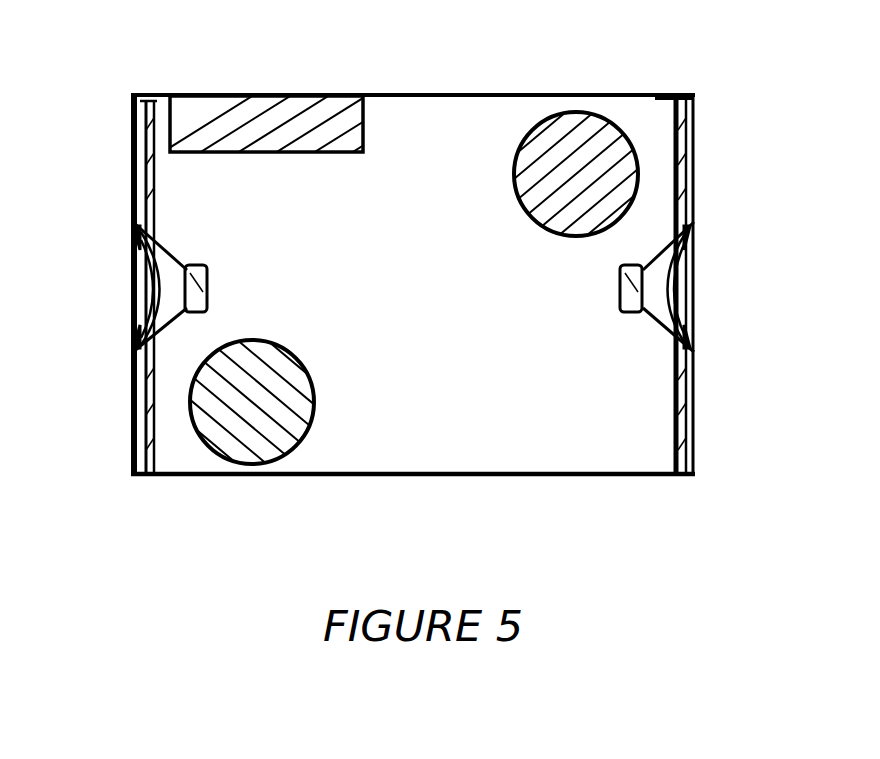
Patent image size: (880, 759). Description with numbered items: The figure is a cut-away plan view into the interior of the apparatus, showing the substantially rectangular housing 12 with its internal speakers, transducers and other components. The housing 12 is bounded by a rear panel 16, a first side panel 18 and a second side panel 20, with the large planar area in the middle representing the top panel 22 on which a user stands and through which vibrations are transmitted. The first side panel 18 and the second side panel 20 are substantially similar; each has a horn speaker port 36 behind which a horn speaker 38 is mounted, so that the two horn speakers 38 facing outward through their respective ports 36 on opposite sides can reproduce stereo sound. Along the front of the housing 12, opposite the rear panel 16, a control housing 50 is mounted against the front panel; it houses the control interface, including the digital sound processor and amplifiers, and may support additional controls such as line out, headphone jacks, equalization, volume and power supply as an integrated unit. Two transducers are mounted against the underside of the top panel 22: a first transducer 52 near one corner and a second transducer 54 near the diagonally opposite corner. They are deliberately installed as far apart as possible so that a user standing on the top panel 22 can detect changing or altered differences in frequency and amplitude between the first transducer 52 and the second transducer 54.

The housing 12 is at (621, 95).
The rear panel 16 is at (386, 476).
The first side panel 18 is at (694, 145).
The second side panel 20 is at (134, 403).
The top panel 22 is at (428, 291).
The horn speaker port 36 is at (133, 221).
The horn speaker 38 is at (158, 281).
The control housing 50 is at (385, 96).
The first transducer 52 is at (196, 432).
The second transducer 54 is at (533, 97).